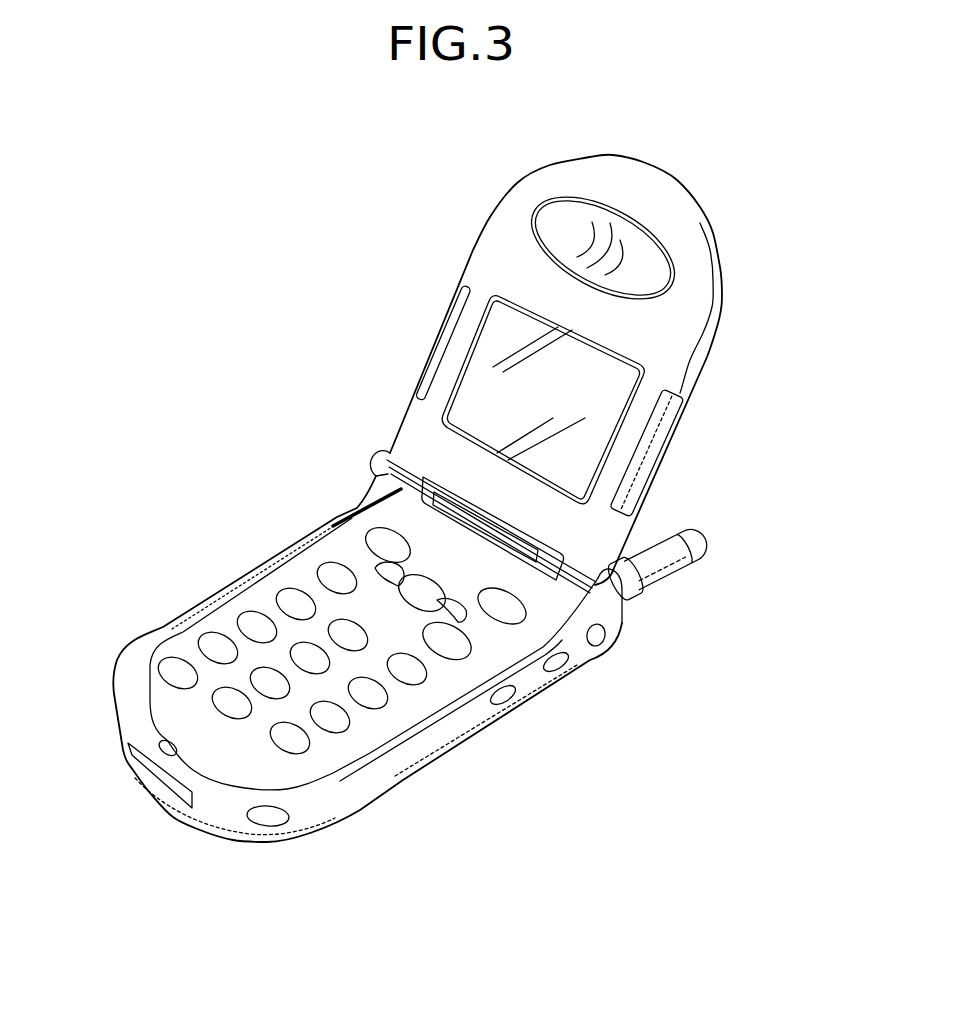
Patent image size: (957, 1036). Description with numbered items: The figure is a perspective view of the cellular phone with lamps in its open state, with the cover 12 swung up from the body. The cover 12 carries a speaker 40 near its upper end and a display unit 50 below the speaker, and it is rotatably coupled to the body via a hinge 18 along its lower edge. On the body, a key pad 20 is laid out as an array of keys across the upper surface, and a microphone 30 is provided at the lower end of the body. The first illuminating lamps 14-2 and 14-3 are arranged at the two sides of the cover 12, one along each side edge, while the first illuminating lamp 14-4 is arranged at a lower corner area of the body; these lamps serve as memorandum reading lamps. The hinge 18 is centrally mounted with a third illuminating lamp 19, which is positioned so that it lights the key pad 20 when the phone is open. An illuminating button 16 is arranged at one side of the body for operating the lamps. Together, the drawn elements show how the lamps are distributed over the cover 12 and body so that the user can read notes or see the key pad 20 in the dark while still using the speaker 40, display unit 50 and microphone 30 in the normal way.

The cover 12 is at (500, 255).
The first illuminating lamp 14-2 is at (653, 457).
The first illuminating lamp 14-3 is at (447, 327).
The first illuminating lamp 14-4 is at (270, 817).
The illuminating button 16 is at (510, 693).
The hinge 18 is at (393, 481).
The third illuminating lamp 19 is at (413, 503).
The key pad 20 is at (200, 627).
The microphone 30 is at (158, 727).
The speaker 40 is at (562, 226).
The display unit 50 is at (470, 408).